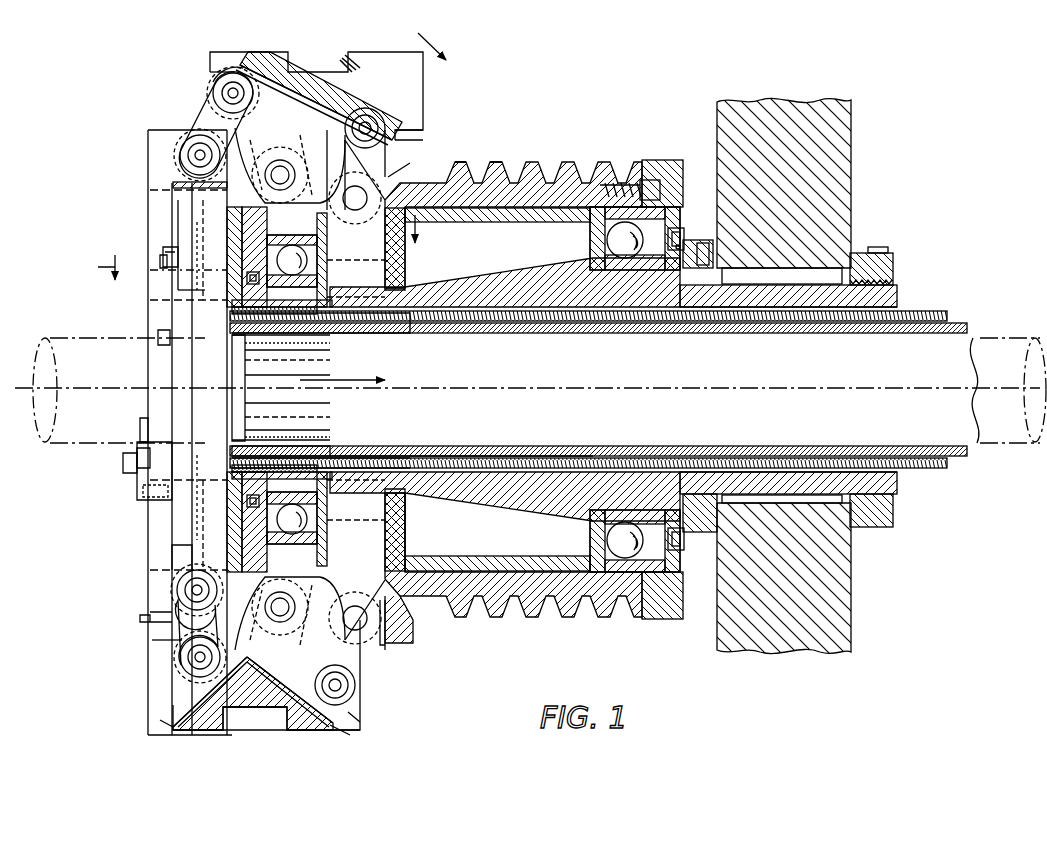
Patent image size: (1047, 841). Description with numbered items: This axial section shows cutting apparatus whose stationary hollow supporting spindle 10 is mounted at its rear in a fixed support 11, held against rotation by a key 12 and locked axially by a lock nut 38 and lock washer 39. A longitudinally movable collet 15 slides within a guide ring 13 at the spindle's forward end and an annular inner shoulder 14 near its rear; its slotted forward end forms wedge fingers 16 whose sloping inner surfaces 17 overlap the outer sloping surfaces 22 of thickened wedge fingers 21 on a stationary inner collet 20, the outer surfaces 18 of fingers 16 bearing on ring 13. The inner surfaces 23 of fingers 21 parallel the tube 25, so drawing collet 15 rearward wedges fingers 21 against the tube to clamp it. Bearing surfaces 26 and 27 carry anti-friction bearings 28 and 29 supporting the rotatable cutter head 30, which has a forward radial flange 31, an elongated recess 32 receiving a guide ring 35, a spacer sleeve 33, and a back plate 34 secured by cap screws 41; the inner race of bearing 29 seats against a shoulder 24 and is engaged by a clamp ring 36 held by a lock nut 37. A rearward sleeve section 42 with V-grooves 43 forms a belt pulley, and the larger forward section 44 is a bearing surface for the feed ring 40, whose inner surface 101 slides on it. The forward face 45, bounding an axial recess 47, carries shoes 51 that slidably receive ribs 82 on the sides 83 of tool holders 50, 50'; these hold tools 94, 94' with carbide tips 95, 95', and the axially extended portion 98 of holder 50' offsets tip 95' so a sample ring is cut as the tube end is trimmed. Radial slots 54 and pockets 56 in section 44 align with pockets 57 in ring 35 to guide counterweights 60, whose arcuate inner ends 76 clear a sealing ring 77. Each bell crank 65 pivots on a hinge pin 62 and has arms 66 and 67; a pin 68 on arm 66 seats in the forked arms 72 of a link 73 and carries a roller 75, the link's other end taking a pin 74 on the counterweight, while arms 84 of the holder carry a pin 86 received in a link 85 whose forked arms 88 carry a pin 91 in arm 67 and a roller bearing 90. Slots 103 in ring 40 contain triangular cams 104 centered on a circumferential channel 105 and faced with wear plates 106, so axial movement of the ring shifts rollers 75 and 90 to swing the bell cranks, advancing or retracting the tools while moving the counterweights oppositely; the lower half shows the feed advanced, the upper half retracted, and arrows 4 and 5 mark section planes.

The hollow supporting spindle 10 is at (895, 292).
The fixed support 11 is at (833, 177).
The key 12 is at (808, 277).
The guide ring 13 is at (330, 440).
The annular inner shoulder 14 is at (780, 308).
The collet 15 is at (947, 313).
The wedge fingers 16 is at (325, 338).
The sloping inner surfaces 17 is at (247, 447).
The outer surfaces 18 is at (248, 300).
The inner collet 20 is at (967, 328).
The wedge fingers 21 is at (250, 400).
The outer sloping surfaces 22 is at (250, 364).
The inner surfaces 23 is at (325, 408).
The shoulder 24 is at (560, 270).
The tube 25 is at (56, 338).
The forward outer bearing surface 26 is at (387, 447).
The second outer bearing surface 27 is at (617, 508).
The anti-friction bearing 28 is at (308, 518).
The anti-friction bearing 29 is at (593, 523).
The cutter head 30 is at (475, 634).
The forward radial flange 31 is at (182, 207).
The radially enlarged elongated recess 32 is at (405, 510).
The spacer sleeve 33 is at (498, 221).
The back plate 34 is at (670, 160).
The guide ring 35 is at (405, 531).
The clamp ring 36 is at (672, 272).
The lock nut 37 is at (702, 532).
The lock nut 38 is at (892, 253).
The lock washer 39 is at (869, 247).
The feed ring 40 is at (205, 730).
The cap screws 41 is at (685, 192).
The rearward cylindrical sleeve section 42 is at (537, 187).
The V-grooves 43 is at (603, 163).
The forward section 44 is at (378, 640).
The forward face 45 is at (227, 537).
The axially extending recess 47 is at (152, 572).
The tool holder 50 is at (128, 250).
The tool holder 50' is at (129, 478).
The shoes 51 is at (180, 200).
The radial slots 54 is at (402, 135).
The rectangular radial pockets 56 is at (392, 647).
The rectangular radial pockets 57 is at (410, 262).
The counterweights 60 is at (405, 268).
The hinge pins 62 is at (280, 172).
The bell cranks 65 is at (267, 140).
The rear arm 66 is at (397, 138).
The forked arm 67 is at (253, 133).
The pin 68 is at (357, 130).
The forked arms 72 is at (412, 153).
The link 73 is at (377, 173).
The pin 74 is at (355, 202).
The roller 75 is at (373, 105).
The inner ends 76 is at (357, 556).
The cylindrical sealing ring 77 is at (433, 480).
The rectangular ribs 82 is at (197, 222).
The opposite sides 83 is at (180, 218).
The spaced arms 84 is at (250, 227).
The link 85 is at (206, 95).
The pin 86 is at (195, 153).
The forked arms 88 is at (234, 88).
The roller bearing 90 is at (287, 72).
The pin 91 is at (226, 80).
The tool 94 is at (143, 261).
The tool 94' is at (126, 457).
The carbide cutting tip 95 is at (142, 347).
The carbide cutting tip 95' is at (125, 425).
The axially extended portion 98 is at (143, 470).
The inner surface 101 is at (160, 653).
The slots 103 is at (160, 723).
The cam 104 is at (250, 693).
The circumferential channel 105 is at (277, 732).
The wear plates 106 is at (393, 73).
The section line 4 is at (376, 218).
The section line 5 is at (260, 260).